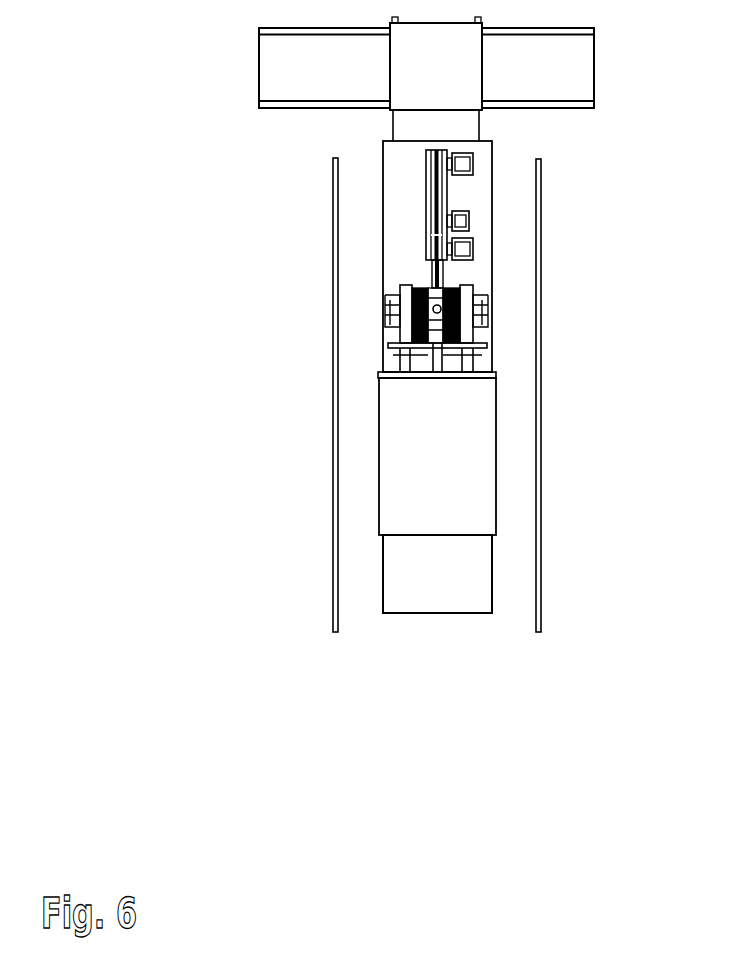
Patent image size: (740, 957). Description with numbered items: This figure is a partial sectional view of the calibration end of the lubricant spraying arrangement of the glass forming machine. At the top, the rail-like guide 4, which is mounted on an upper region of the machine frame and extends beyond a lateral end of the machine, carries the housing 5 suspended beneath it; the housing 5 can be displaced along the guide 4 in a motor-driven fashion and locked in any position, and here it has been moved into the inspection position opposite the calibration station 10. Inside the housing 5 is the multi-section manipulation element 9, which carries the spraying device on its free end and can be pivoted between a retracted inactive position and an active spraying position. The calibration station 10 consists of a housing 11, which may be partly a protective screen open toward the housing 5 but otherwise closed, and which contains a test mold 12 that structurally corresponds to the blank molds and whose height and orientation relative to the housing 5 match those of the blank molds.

The rail-like guide 4 is at (594, 71).
The housing 5 is at (407, 613).
The manipulation element 9 is at (448, 195).
The calibration station 10 is at (488, 683).
The housing 11 is at (543, 227).
The test mold 12 is at (455, 290).